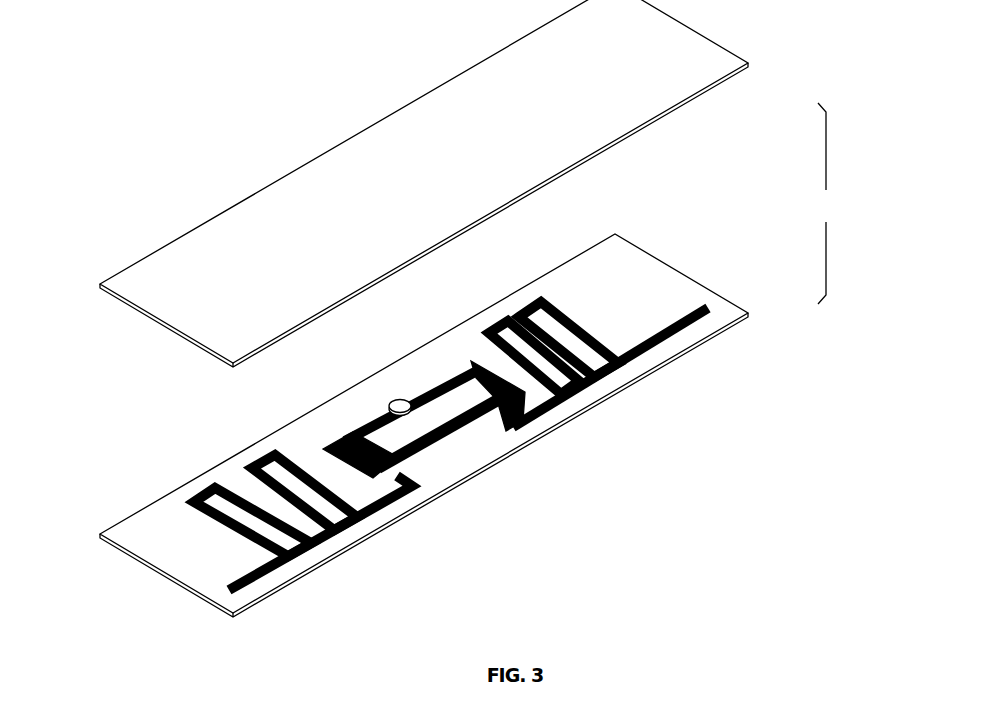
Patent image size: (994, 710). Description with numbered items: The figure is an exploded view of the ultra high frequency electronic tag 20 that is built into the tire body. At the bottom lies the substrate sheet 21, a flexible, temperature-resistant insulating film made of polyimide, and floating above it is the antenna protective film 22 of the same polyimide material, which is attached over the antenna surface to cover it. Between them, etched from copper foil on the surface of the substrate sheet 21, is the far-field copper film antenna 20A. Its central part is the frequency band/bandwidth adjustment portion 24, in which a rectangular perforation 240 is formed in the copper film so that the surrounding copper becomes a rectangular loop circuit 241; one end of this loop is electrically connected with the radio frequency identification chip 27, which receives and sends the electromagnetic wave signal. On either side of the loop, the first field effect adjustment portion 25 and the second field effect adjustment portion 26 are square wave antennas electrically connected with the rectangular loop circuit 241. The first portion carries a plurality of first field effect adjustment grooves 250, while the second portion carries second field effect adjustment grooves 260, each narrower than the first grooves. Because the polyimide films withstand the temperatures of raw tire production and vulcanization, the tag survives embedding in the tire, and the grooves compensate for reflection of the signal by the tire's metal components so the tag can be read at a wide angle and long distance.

The ultra high frequency electronic tag 20 is at (828, 203).
The substrate sheet 21 is at (133, 541).
The antenna protective film 22 is at (228, 231).
The frequency band/bandwidth adjustment portion 24 is at (451, 413).
The rectangular perforation 240 is at (444, 448).
The rectangular loop circuit 241 is at (418, 433).
The first field effect adjustment portion 25 is at (268, 513).
The first field effect adjustment grooves 250 is at (240, 512).
The second field effect adjustment portion 26 is at (621, 344).
The second field effect adjustment grooves 260 is at (578, 322).
The radio frequency identification (RFID) chip 27 is at (397, 399).
The far-field copper film antenna 20A is at (333, 433).